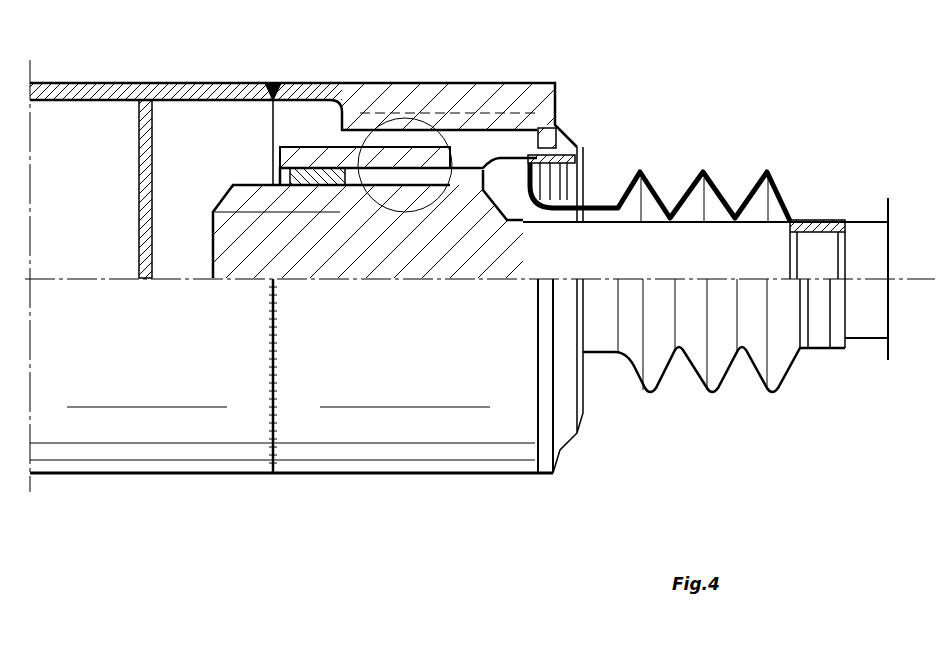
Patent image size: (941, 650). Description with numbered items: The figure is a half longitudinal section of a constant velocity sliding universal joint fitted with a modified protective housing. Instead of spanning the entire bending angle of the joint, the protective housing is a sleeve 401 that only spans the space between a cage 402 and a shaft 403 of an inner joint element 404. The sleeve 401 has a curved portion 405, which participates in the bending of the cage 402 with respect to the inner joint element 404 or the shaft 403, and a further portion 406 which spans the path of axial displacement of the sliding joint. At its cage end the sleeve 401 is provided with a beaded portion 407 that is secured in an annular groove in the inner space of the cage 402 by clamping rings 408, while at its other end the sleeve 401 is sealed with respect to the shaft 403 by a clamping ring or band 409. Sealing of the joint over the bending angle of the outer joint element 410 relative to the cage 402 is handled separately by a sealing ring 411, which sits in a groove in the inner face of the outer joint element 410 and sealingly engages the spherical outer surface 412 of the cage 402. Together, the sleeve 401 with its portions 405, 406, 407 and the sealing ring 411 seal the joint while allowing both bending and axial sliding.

The sleeve 401 is at (671, 477).
The cage 402 is at (403, 150).
The shaft 403 is at (744, 260).
The inner joint element 404 is at (287, 230).
The curved portion 405 is at (568, 197).
The portion spanning the path of axial displacement 406 is at (770, 170).
The beaded portion 407 is at (562, 150).
The clamping rings 408 is at (540, 147).
The clamping ring or band 409 is at (818, 220).
The outer joint element 410 is at (327, 92).
The sealing ring 411 is at (556, 140).
The spherical outer surface 412 is at (453, 112).